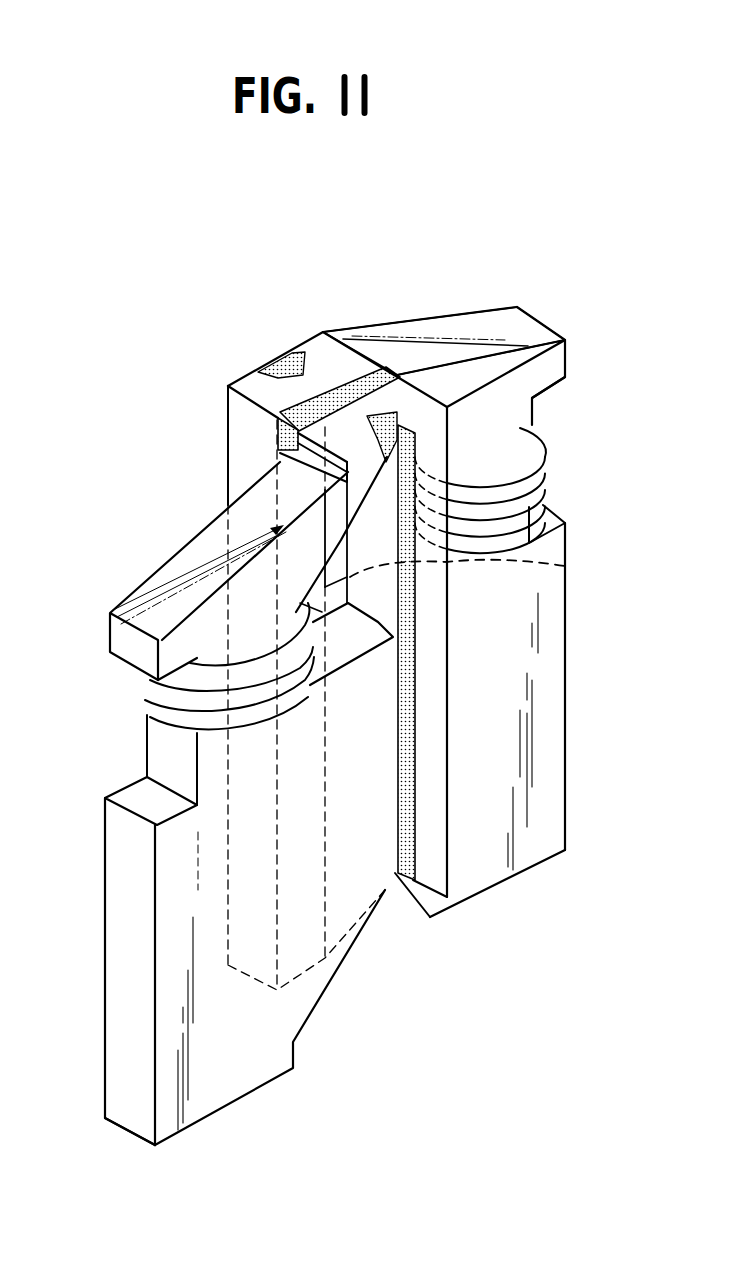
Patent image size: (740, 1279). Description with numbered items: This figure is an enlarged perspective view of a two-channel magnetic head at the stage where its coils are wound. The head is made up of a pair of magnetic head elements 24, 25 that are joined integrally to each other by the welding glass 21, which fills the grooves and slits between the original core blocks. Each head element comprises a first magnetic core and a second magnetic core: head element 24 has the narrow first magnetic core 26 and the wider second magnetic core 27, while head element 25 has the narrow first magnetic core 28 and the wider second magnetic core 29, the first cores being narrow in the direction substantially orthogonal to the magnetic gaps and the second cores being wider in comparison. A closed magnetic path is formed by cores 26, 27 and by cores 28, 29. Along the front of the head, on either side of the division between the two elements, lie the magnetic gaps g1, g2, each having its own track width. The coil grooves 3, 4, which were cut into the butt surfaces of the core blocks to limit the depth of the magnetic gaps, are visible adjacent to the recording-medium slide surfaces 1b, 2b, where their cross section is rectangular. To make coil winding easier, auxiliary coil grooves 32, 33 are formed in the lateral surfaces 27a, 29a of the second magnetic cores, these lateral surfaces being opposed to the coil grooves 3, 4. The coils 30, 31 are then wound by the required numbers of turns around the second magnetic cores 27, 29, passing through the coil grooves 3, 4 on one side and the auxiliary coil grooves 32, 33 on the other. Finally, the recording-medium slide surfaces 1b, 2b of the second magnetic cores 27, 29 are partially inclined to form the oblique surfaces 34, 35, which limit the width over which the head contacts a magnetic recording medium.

The recording-medium slide surface 1b is at (332, 343).
The recording-medium slide surface 2b is at (280, 460).
The coil groove 3 is at (567, 566).
The coil groove 4 is at (343, 657).
The welding glass 21 is at (352, 378).
The magnetic head element 24 is at (478, 290).
The magnetic head element 25 is at (166, 522).
The first magnetic core 26 is at (262, 378).
The second magnetic core 27 is at (556, 634).
The lateral surface 27a is at (566, 820).
The first magnetic core 28 is at (435, 748).
The second magnetic core 29 is at (167, 930).
The lateral surface 29a is at (115, 1052).
The coil 30 is at (537, 457).
The coil 31 is at (152, 697).
The auxiliary coil groove 32 is at (538, 408).
The auxiliary coil groove 33 is at (160, 756).
The oblique surface 34 is at (523, 330).
The oblique surface 35 is at (140, 587).
The magnetic gap g1 is at (398, 376).
The magnetic gap g2 is at (310, 372).